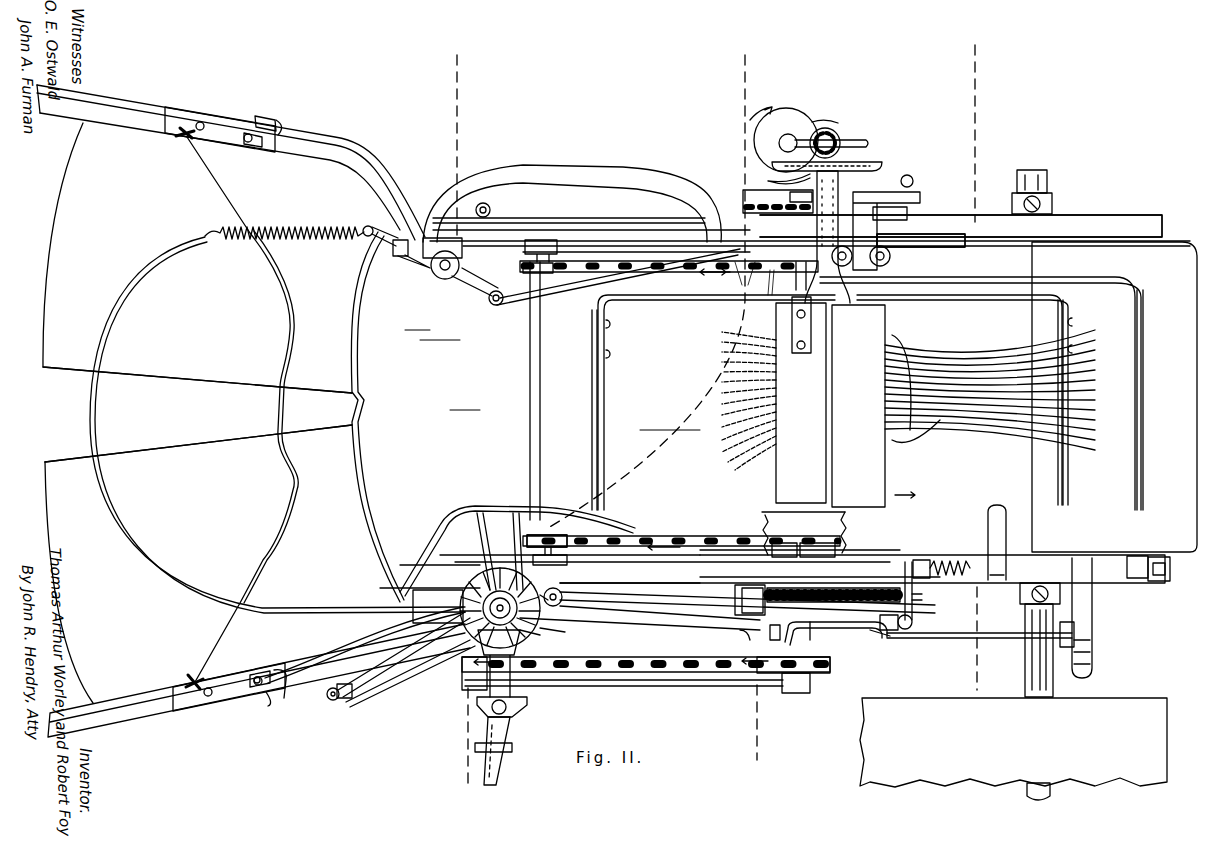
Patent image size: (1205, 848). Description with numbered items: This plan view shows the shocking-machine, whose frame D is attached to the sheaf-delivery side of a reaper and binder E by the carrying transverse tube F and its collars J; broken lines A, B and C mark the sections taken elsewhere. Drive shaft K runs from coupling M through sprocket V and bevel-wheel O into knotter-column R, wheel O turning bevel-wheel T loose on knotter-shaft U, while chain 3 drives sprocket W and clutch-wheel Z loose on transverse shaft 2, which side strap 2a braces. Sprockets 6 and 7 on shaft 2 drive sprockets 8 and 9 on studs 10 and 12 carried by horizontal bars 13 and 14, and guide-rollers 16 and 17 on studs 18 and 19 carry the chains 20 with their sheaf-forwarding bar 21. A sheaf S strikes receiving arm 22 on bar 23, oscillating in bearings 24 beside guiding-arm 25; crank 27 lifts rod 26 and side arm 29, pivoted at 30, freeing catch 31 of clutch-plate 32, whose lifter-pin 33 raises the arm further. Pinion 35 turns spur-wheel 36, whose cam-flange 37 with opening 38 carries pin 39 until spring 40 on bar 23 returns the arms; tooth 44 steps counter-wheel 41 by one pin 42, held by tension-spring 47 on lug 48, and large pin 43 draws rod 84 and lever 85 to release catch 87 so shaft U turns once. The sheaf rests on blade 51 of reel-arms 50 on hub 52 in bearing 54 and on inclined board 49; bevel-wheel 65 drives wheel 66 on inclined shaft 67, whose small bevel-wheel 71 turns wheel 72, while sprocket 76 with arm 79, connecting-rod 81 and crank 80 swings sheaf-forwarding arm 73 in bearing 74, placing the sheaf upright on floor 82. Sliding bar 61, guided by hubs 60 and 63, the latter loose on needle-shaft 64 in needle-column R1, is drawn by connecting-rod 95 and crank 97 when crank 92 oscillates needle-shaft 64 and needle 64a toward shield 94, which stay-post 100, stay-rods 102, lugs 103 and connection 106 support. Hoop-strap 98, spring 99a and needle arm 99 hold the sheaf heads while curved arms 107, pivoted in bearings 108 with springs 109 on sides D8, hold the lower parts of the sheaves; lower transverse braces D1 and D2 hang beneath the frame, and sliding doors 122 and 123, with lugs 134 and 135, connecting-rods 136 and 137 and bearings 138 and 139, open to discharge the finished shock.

The section line A is at (460, 411).
The section line B is at (980, 370).
The section line C is at (657, 411).
The guide rail D is at (114, 110).
The rail plate D8 is at (121, 708).
The rail extension D1 is at (905, 214).
The rail connection D2 is at (430, 598).
The upper plate edge 122 is at (155, 372).
The lower plate edge 123 is at (153, 455).
The slide block 108 is at (175, 118).
The pin 109 is at (185, 138).
The bracket 134 is at (256, 117).
The clip 136 is at (282, 128).
The lug 138 is at (250, 147).
The lug 139 is at (265, 671).
The bracket 137 is at (282, 672).
The clip 135 is at (268, 700).
The tie rod 107 is at (225, 193).
The spring 99a is at (305, 241).
The spring anchor ring 99 is at (368, 226).
The curved arm 98 is at (170, 576).
The housing wall 82 is at (358, 405).
The handle 64a is at (570, 172).
The screw 92 is at (491, 211).
The shaft 14 is at (640, 232).
The guide bar 9 is at (567, 245).
The slide 12 is at (538, 250).
The slide block R' R1 is at (462, 260).
The rod 61 is at (395, 254).
The link 63 is at (405, 268).
The crank 64 is at (434, 272).
The connecting link 97 is at (478, 292).
The lever bar 95 is at (578, 283).
The rack 20 is at (680, 266).
The rack bar 13 is at (620, 546).
The lever 17' 17 is at (741, 275).
The spring 19' 19 is at (771, 282).
The post 7' 7 is at (803, 276).
The disk 66 is at (792, 122).
The gear wheel 71 is at (838, 133).
The shaft 67 is at (862, 143).
The table 72 is at (878, 165).
The column 54 is at (816, 231).
The lever 65 is at (765, 180).
The ratchet block 76 is at (772, 198).
The pawl 79 is at (788, 196).
The pin 81 is at (914, 182).
The bracket 80 is at (920, 199).
The rod 74 is at (884, 240).
The roller 60 is at (891, 252).
The post F is at (1032, 170).
The clamp J is at (1053, 200).
The housing 49 is at (1172, 245).
The pipe 73 is at (1104, 280).
The pipe 50 is at (690, 300).
The plate 51 is at (598, 477).
The bracket 52 is at (790, 302).
The rod 21 is at (541, 420).
The brush stock S is at (730, 420).
The frame arch 94 is at (499, 508).
The strut 103 is at (490, 570).
The hub gear O is at (515, 635).
The block U is at (547, 558).
The block 8 is at (566, 546).
The pin 10 is at (553, 558).
The roller 85 is at (560, 605).
The pin 87 is at (540, 605).
The rod 48 is at (600, 608).
The rod 47 is at (658, 612).
The rod 84 is at (700, 614).
The block 42 is at (735, 590).
The block 35 is at (768, 592).
The gear rack 38 is at (830, 590).
The gear 39 is at (866, 590).
The post 36 is at (905, 570).
The rod 27 is at (914, 597).
The roller 37 is at (913, 621).
The pipe 33 is at (840, 633).
The valve Z is at (818, 640).
The coupling 26 is at (885, 638).
The rod 29 is at (962, 639).
The block 31 is at (768, 638).
The clip 32 is at (732, 640).
The rod 41 is at (700, 632).
The rack 3 is at (638, 660).
The link R is at (540, 635).
The link T is at (565, 632).
The block V is at (462, 680).
The bar 2a is at (652, 686).
The block W is at (832, 670).
The block 2 is at (800, 693).
The plate 6 is at (803, 520).
The bar 16 is at (742, 538).
The bar 18 is at (745, 550).
The block 43 is at (783, 552).
The block 44 is at (817, 552).
The bearing M is at (520, 702).
The shaft K is at (498, 773).
The pivot 106 is at (327, 698).
The link 100 is at (330, 690).
The link 102 is at (390, 668).
The post 22 is at (1006, 540).
The spring 40 is at (958, 562).
The block 24 is at (922, 560).
The strap 25 is at (1082, 560).
The block 30 is at (1067, 648).
The post 23 is at (1106, 570).
The base plate E is at (1013, 742).